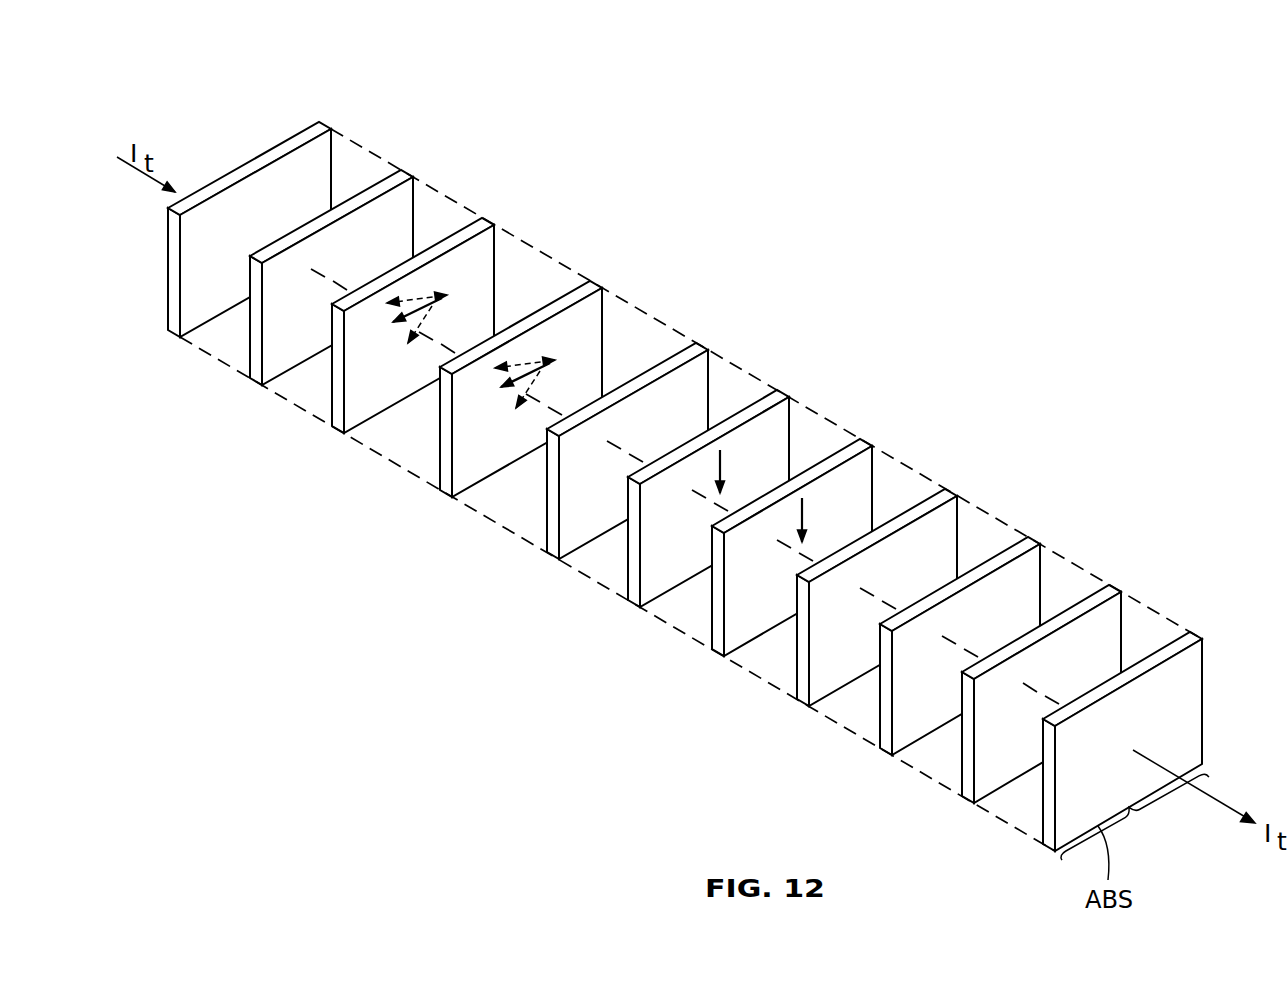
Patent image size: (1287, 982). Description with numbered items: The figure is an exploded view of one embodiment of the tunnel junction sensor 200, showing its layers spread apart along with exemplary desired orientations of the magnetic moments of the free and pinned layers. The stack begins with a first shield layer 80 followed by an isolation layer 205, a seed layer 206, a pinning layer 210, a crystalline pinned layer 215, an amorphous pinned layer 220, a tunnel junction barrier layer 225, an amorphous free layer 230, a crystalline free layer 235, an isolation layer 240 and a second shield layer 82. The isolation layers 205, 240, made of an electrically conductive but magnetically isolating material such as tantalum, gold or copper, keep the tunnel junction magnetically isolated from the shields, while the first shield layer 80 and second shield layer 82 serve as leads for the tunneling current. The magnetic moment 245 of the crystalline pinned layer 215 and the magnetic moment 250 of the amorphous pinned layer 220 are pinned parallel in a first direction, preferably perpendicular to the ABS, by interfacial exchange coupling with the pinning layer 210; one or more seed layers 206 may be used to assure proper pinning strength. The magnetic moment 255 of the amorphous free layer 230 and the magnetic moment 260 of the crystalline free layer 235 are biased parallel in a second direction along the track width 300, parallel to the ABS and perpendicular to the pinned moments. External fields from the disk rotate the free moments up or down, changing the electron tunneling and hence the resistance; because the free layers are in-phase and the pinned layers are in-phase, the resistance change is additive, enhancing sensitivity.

The first shield layer 80 is at (1192, 634).
The second shield layer 82 is at (322, 123).
The tunnel junction sensor 200 is at (985, 370).
The isolation layer 205 is at (1117, 588).
The seed layer 206 is at (1036, 538).
The pinning layer 210 is at (952, 494).
The crystalline pinned layer 215 is at (868, 444).
The amorphous pinned layer 220 is at (784, 392).
The tunnel junction barrier layer 225 is at (698, 344).
The amorphous free layer 230 is at (592, 282).
The crystalline free layer 235 is at (484, 218).
The isolation layer 240 is at (403, 172).
The magnetic moment of the crystalline pinned layer 245 is at (803, 515).
The magnetic moment of the amorphous pinned layer 250 is at (722, 467).
The magnetic moment of the amorphous free layer 255 is at (540, 383).
The magnetic moment of the crystalline free layer 260 is at (423, 315).
The track width 300 is at (1135, 817).